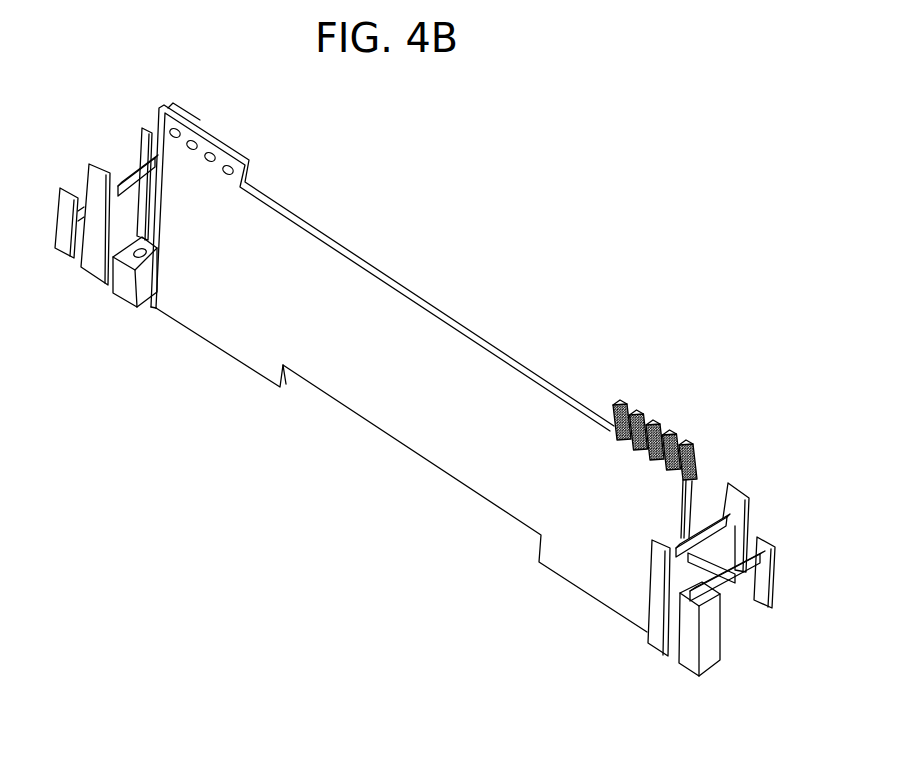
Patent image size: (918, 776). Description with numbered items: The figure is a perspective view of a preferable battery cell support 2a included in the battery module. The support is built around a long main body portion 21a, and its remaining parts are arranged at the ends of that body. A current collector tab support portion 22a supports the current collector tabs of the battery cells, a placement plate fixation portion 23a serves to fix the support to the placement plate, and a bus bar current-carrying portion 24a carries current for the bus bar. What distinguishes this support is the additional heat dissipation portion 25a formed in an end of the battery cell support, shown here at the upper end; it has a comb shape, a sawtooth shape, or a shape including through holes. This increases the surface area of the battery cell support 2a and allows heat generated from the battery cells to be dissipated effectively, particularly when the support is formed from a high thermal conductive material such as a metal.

The battery cell support 2a is at (98, 134).
The main body portion 21a is at (200, 320).
The current collector tab support portion 22a is at (722, 533).
The placement plate fixation portion 23a is at (128, 292).
The bus bar current-carrying portion 24a is at (730, 588).
The heat dissipation portion 25a is at (232, 163).